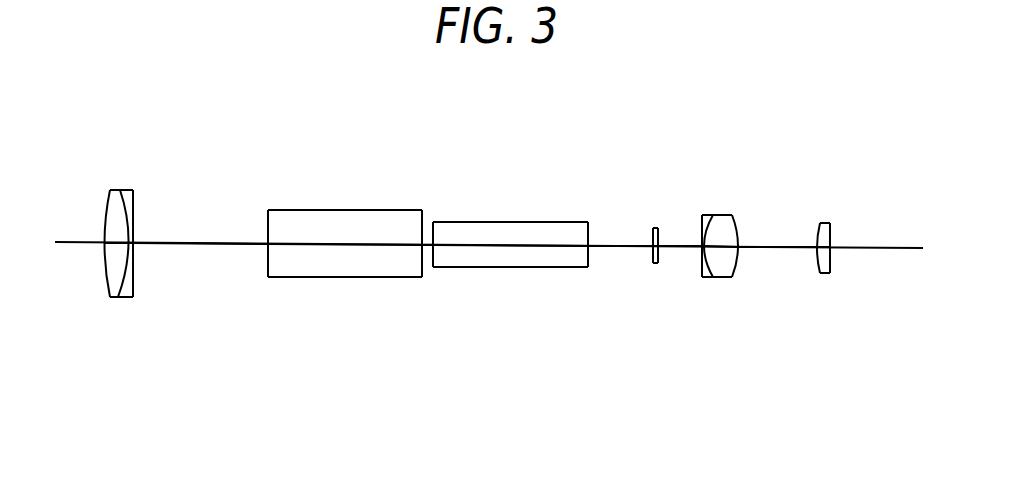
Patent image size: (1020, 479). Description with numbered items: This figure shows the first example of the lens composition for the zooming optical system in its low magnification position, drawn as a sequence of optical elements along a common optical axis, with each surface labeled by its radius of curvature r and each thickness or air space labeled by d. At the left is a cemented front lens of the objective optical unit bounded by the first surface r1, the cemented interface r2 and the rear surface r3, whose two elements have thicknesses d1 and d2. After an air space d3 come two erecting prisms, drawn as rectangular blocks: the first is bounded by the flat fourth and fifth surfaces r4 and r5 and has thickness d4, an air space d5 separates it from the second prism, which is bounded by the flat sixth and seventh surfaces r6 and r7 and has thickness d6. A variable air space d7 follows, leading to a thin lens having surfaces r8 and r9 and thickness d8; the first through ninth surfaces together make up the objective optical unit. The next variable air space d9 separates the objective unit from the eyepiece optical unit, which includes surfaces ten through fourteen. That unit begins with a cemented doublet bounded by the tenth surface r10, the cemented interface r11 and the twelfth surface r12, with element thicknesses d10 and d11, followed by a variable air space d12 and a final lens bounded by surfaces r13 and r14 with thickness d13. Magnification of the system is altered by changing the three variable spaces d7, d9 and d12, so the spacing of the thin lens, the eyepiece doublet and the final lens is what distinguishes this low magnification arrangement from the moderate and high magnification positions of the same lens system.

The first lens surface r1 is at (108, 200).
The second lens surface r2 is at (119, 192).
The third lens surface r3 is at (135, 203).
The fourth surface r4 is at (268, 222).
The fifth surface r5 is at (423, 213).
The sixth surface r6 is at (434, 220).
The seventh surface r7 is at (590, 220).
The eighth surface r8 is at (652, 226).
The ninth surface r9 is at (660, 226).
The tenth surface r10 is at (703, 216).
The eleventh surface r11 is at (718, 214).
The twelfth surface r12 is at (738, 218).
The thirteenth surface r13 is at (819, 222).
The fourteenth surface r14 is at (830, 222).
The lens thickness d1 is at (113, 245).
The lens thickness d2 is at (134, 275).
The air space d3 is at (198, 247).
The prism thickness d4 is at (343, 246).
The air space d5 is at (428, 250).
The prism thickness d6 is at (508, 247).
The variable air space d7 is at (618, 248).
The lens thickness d8 is at (655, 250).
The variable air space d9 is at (680, 250).
The lens thickness d10 is at (707, 250).
The lens thickness d11 is at (721, 255).
The variable air space d12 is at (776, 250).
The lens thickness d13 is at (826, 250).